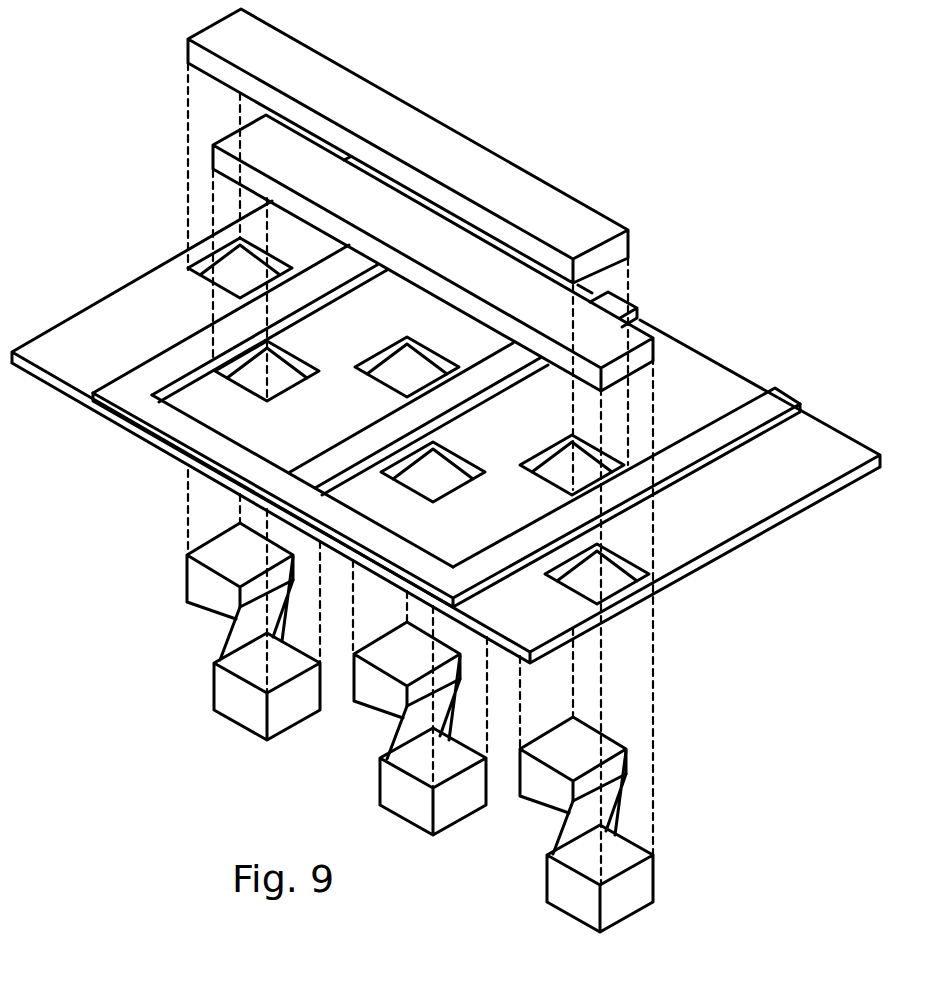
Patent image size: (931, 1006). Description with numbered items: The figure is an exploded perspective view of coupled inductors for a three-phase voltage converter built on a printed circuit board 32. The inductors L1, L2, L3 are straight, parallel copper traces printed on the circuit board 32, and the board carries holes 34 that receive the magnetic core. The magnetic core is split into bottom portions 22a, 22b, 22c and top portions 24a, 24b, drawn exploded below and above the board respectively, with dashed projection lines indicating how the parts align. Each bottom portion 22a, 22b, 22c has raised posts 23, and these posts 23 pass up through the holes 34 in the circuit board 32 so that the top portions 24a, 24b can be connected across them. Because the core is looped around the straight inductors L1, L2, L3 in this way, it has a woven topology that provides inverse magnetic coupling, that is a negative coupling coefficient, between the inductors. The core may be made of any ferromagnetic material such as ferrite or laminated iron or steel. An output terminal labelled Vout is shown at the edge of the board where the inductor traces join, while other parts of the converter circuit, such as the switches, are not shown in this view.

The printed circuit board 32 is at (132, 310).
The holes 34 is at (400, 373).
The top portion 24a is at (408, 363).
The top portion 24b is at (433, 500).
The raised posts 23 is at (215, 587).
The bottom portion 22a is at (198, 665).
The bottom portion 22b is at (348, 768).
The bottom portion 22c is at (512, 862).
The inductor L1 is at (197, 350).
The inductor L2 is at (370, 440).
The inductor L3 is at (552, 537).
The output terminal Vout is at (148, 424).